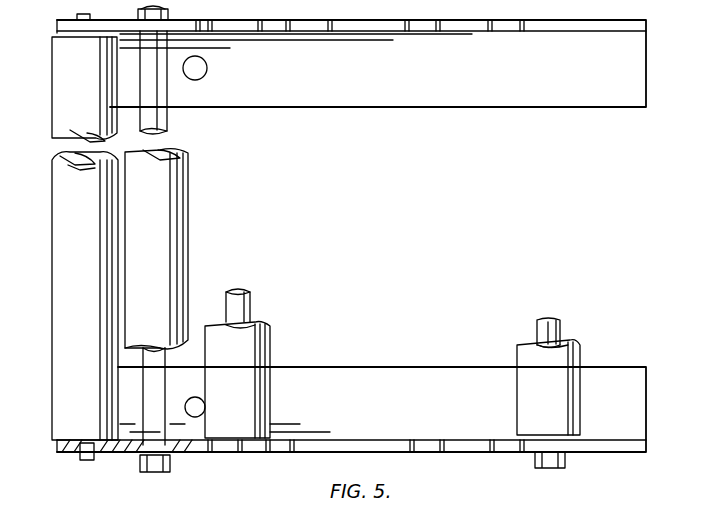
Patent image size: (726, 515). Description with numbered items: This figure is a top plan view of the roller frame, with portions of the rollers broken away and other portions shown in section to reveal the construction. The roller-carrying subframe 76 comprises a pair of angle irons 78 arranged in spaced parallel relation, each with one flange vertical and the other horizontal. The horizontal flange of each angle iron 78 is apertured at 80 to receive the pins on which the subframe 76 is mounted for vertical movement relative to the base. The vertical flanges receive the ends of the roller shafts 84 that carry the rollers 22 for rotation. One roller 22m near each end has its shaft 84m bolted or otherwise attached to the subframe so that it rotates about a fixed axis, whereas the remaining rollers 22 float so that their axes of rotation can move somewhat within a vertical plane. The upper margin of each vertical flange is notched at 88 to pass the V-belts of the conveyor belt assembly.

The roller 22 is at (60, 238).
The roller 22m is at (176, 213).
The roller-carrying subframe 76 is at (57, 25).
The angle iron 78 is at (420, 103).
The aperture 80 is at (207, 69).
The roller shaft 84 is at (80, 450).
The roller shaft 84m is at (160, 122).
The notch 88 is at (272, 24).